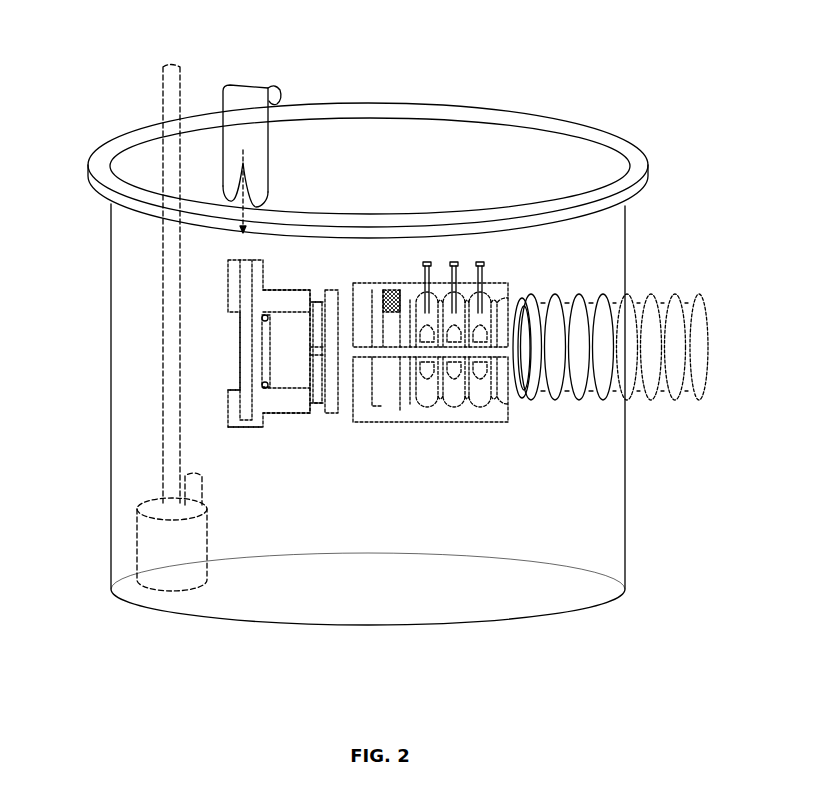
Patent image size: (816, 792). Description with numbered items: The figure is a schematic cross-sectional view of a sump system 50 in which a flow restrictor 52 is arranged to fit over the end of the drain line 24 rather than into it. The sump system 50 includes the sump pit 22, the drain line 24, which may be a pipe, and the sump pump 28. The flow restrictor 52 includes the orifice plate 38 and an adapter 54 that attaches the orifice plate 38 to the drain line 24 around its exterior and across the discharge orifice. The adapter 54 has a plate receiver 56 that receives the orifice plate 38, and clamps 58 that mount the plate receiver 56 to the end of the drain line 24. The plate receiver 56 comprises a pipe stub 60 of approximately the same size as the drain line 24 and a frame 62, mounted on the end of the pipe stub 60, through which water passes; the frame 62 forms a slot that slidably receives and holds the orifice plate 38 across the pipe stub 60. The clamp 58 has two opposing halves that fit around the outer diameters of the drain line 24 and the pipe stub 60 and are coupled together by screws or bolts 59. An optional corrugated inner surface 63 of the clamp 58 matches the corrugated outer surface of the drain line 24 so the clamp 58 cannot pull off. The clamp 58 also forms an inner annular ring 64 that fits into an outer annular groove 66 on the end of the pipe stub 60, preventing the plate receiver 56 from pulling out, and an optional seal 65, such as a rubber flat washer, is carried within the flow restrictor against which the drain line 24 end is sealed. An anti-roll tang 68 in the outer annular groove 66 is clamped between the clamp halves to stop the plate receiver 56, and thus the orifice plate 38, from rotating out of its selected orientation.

The sump pit 22 is at (372, 598).
The drain line 24 is at (679, 400).
The sump pump 28 is at (137, 554).
The orifice plate 38 is at (268, 132).
The sump system 50 is at (97, 48).
The flow restrictor 52 is at (296, 491).
The adapter 54 is at (223, 405).
The plate receiver 56 is at (245, 428).
The clamps 58 is at (500, 283).
The screws or bolts 59 is at (454, 262).
The pipe stub 60 is at (288, 289).
The frame 62 is at (228, 290).
The corrugated inner surface 63 is at (490, 404).
The inner annular ring 64 is at (377, 302).
The seal 65 is at (263, 320).
The outer annular groove 66 is at (313, 401).
The anti-roll tang 68 is at (317, 344).